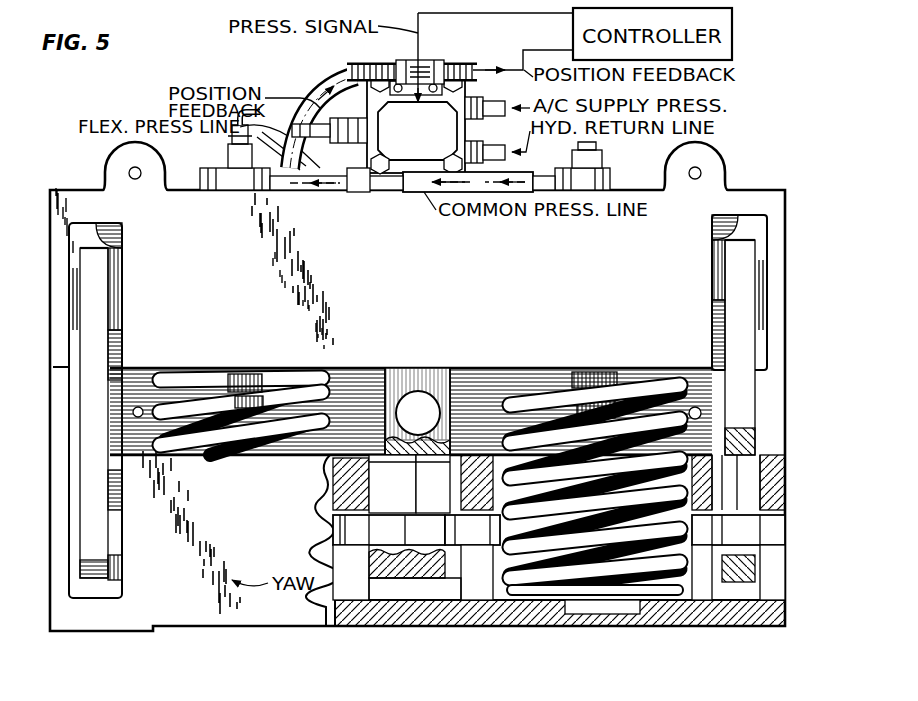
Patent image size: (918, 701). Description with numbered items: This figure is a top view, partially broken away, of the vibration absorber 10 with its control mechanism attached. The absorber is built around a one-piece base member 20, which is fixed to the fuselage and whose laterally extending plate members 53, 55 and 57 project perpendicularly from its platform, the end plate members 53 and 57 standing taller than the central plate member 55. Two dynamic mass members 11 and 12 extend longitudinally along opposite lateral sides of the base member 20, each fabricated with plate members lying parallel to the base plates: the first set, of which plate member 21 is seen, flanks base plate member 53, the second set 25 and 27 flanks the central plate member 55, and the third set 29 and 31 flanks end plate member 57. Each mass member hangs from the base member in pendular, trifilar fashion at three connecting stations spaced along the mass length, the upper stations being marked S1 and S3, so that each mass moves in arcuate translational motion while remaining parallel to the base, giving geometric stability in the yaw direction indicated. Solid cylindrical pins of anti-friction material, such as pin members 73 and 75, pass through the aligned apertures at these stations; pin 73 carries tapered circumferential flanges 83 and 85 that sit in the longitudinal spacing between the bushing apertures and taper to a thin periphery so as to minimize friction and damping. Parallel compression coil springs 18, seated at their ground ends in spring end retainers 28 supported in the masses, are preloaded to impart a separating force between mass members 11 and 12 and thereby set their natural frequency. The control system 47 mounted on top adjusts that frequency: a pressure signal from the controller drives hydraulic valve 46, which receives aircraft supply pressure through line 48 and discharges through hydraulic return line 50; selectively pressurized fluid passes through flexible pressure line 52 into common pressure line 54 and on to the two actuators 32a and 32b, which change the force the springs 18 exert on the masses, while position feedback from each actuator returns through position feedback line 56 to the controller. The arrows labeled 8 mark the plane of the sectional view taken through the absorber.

The vibration absorber 10 is at (56, 114).
The mass member 11 is at (273, 539).
The mass member 12 is at (235, 290).
The compression coil spring 18 is at (530, 380).
The base member 20 is at (140, 380).
The plate member 21 is at (68, 468).
The plate member 25 is at (340, 500).
The plate member 27 is at (472, 488).
The spring end retainer 28 is at (598, 614).
The plate member 29 is at (756, 442).
The plate member 31 is at (772, 492).
The actuator 32a is at (250, 193).
The actuator 32b is at (612, 172).
The hydraulic valve 46 is at (426, 139).
The control system 47 is at (306, 78).
The aircraft supply pressure line 48 is at (520, 66).
The hydraulic return line 50 is at (496, 150).
The flexible pressure line 52 is at (380, 488).
The end plate member 53 is at (90, 410).
The common pressure line 54 is at (410, 194).
The central plate member 55 is at (432, 372).
The position feedback line 56 is at (468, 58).
The end plate member 57 is at (752, 412).
The pin member 73 is at (482, 545).
The pin member 75 is at (770, 530).
The tapered circumferential flange 83 is at (374, 526).
The tapered circumferential flange 85 is at (452, 526).
The section line 8- 8 is at (814, 75).
The pendular connecting station S1 is at (722, 332).
The pendular connecting station S3 is at (110, 326).